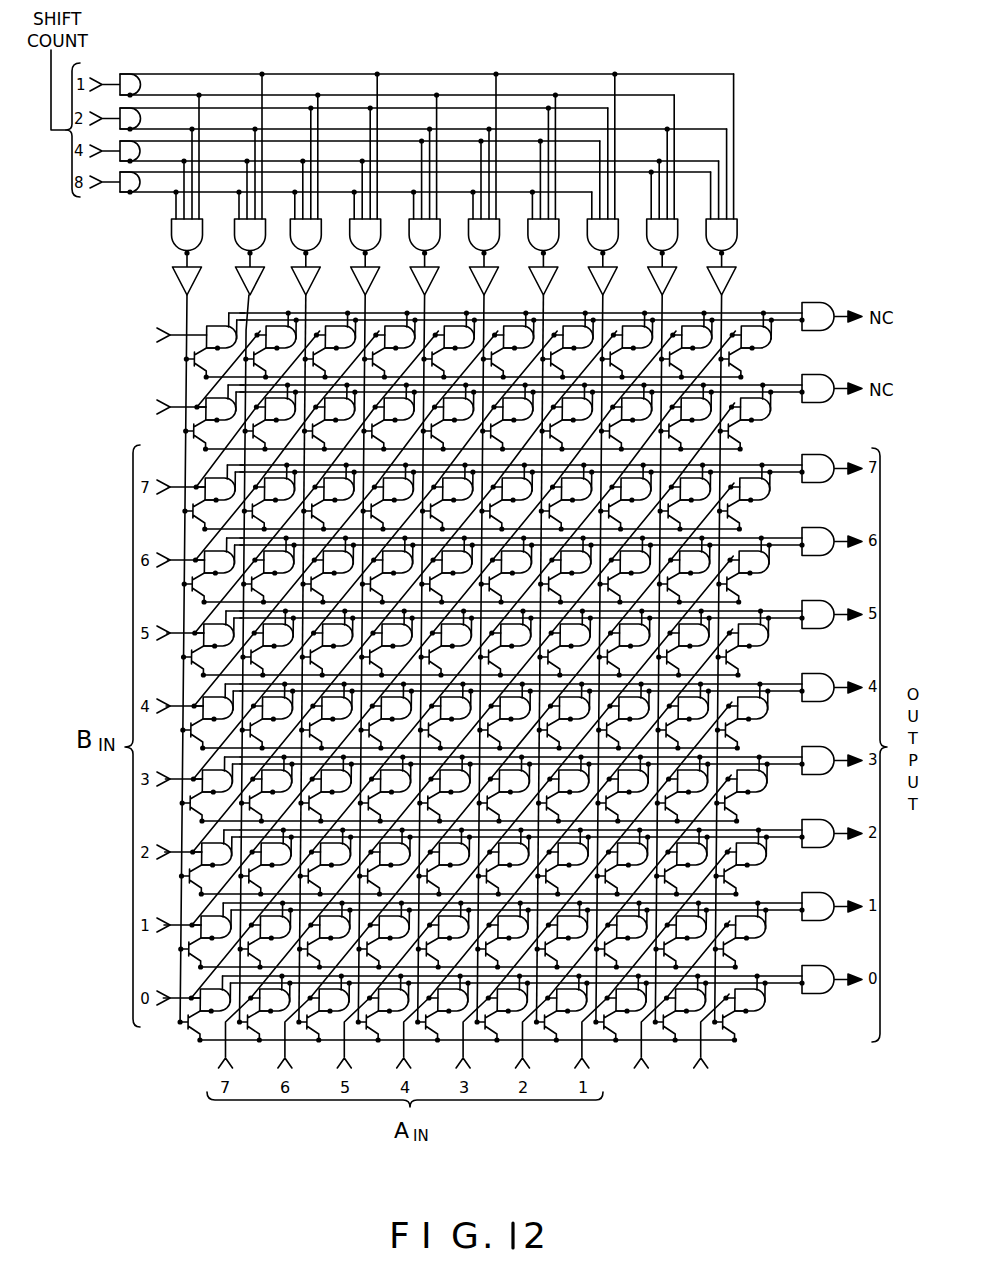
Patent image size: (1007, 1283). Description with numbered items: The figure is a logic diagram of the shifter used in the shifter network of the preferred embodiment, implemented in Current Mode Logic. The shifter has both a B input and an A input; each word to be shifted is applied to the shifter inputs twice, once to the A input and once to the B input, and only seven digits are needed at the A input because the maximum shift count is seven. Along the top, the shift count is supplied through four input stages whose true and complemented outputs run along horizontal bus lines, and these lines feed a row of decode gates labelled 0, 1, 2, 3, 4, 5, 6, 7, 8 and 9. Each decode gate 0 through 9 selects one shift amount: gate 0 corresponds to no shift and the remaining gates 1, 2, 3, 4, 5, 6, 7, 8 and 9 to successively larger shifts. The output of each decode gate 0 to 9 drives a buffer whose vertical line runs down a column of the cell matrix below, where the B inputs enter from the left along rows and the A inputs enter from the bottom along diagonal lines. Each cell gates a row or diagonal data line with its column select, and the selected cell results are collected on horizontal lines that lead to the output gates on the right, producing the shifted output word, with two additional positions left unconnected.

The shift count decoder AND gate 0 is at (187, 193).
The shift count decoder AND gate 1 is at (250, 183).
The shift count decoder AND gate 2 is at (305, 193).
The shift count decoder AND gate 3 is at (365, 183).
The shift count decoder AND gate 4 is at (424, 193).
The shift count decoder AND gate 5 is at (484, 183).
The shift count decoder AND gate 6 is at (543, 193).
The shift count decoder AND gate 7 is at (602, 183).
The shift count decoder AND gate 8 is at (662, 195).
The shift count decoder AND gate 9 is at (721, 184).